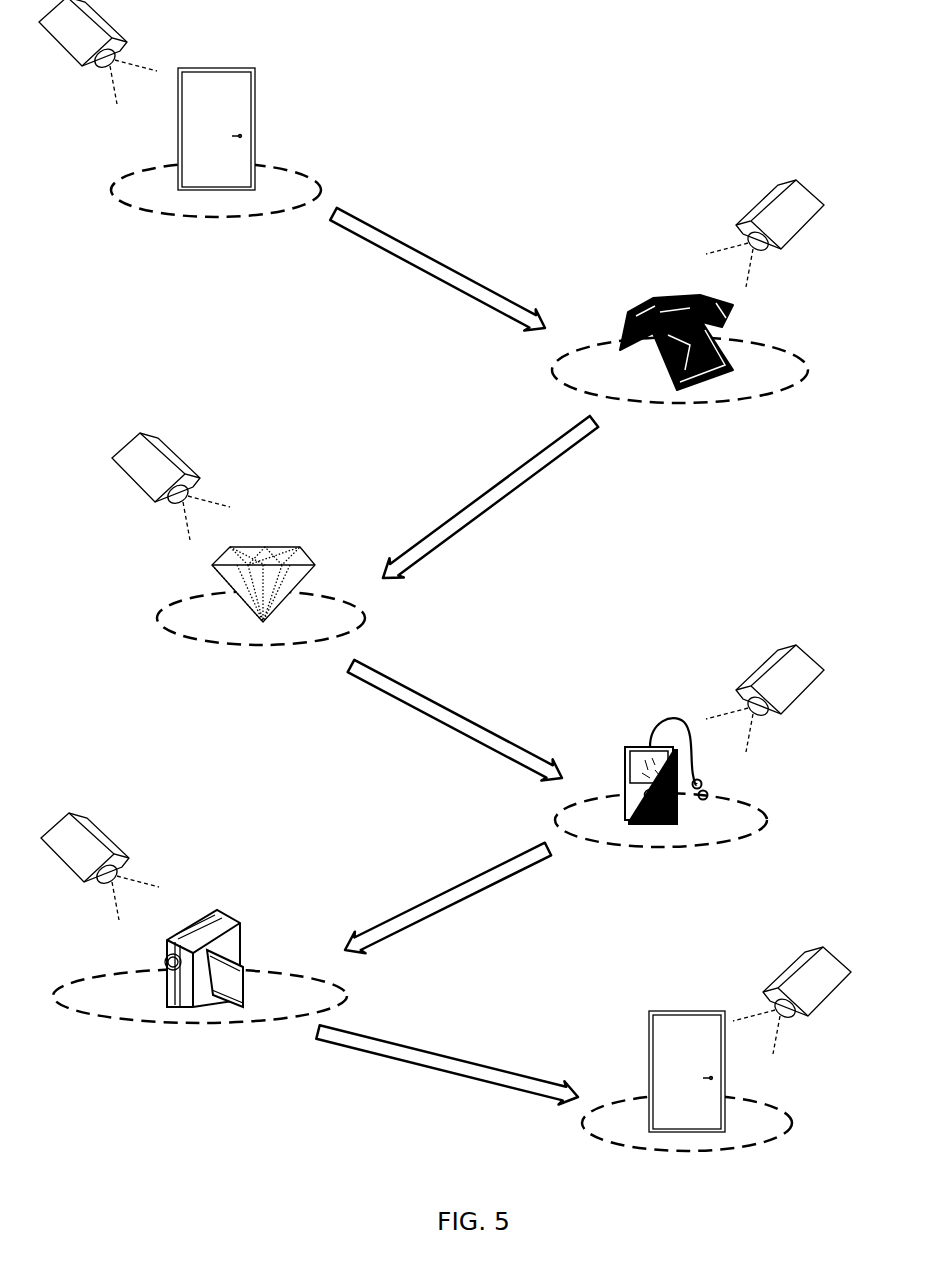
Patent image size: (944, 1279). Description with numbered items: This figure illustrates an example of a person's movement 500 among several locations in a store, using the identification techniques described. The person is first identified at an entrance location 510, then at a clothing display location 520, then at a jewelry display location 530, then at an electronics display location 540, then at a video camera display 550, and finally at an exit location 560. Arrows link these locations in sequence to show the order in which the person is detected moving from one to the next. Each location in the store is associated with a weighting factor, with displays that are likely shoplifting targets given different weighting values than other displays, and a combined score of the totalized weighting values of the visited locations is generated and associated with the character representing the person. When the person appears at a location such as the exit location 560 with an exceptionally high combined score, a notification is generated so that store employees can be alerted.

The person's movement 500 is at (609, 74).
The entrance location 510 is at (124, 203).
The clothing display location 520 is at (760, 400).
The jewelry display location 530 is at (207, 641).
The electronics display location 540 is at (740, 842).
The video camera display 550 is at (95, 1016).
The exit location 560 is at (767, 1140).